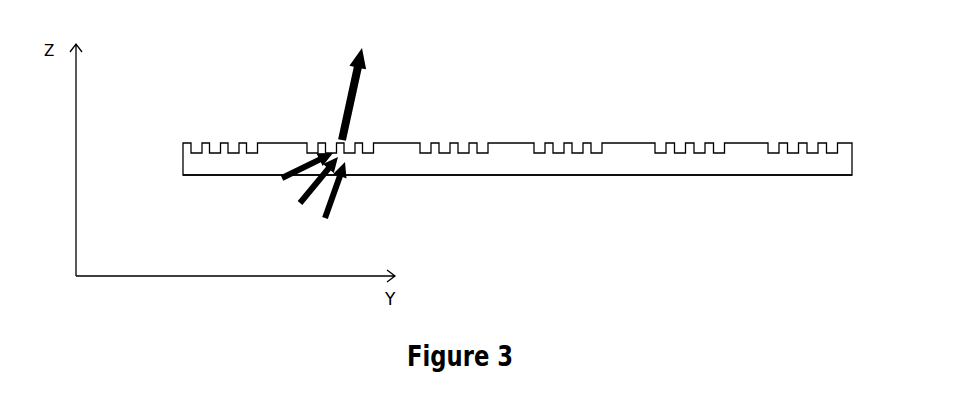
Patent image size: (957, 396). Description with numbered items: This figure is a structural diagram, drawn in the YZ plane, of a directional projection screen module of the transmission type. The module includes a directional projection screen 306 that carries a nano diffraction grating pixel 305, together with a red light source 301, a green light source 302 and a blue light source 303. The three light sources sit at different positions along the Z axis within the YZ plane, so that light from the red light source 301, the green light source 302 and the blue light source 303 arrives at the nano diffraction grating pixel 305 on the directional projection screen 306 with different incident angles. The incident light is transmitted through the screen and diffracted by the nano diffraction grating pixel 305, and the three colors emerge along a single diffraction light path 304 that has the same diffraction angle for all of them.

The red light source 301 is at (281, 180).
The green light source 302 is at (305, 204).
The blue light source 303 is at (331, 220).
The diffraction light path 304 is at (366, 52).
The nano diffraction grating pixel 305 is at (367, 141).
The directional projection screen 306 is at (845, 170).